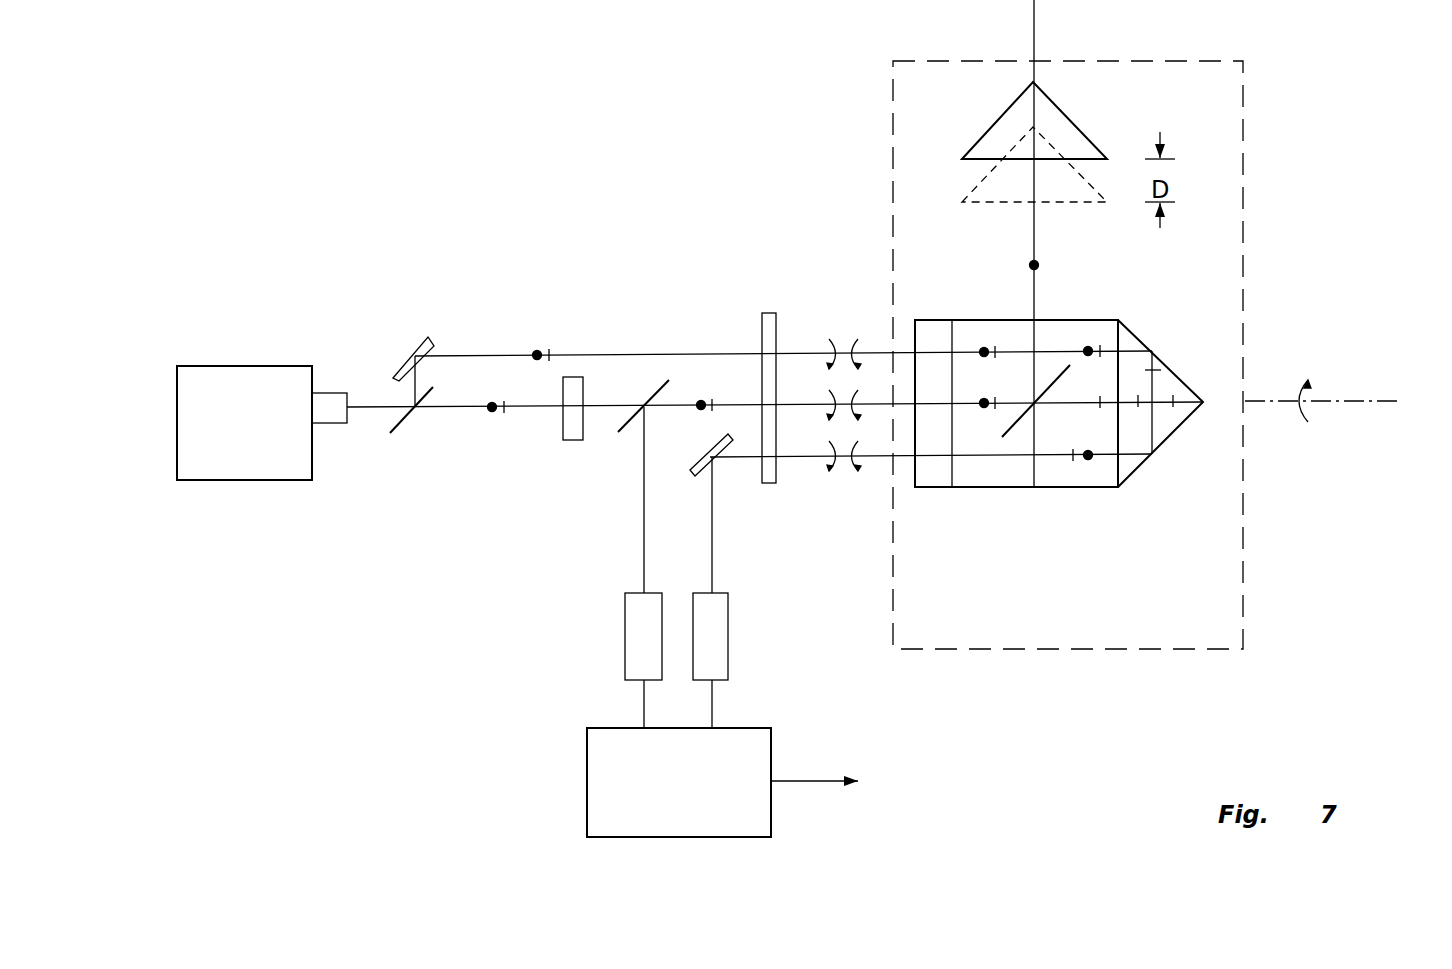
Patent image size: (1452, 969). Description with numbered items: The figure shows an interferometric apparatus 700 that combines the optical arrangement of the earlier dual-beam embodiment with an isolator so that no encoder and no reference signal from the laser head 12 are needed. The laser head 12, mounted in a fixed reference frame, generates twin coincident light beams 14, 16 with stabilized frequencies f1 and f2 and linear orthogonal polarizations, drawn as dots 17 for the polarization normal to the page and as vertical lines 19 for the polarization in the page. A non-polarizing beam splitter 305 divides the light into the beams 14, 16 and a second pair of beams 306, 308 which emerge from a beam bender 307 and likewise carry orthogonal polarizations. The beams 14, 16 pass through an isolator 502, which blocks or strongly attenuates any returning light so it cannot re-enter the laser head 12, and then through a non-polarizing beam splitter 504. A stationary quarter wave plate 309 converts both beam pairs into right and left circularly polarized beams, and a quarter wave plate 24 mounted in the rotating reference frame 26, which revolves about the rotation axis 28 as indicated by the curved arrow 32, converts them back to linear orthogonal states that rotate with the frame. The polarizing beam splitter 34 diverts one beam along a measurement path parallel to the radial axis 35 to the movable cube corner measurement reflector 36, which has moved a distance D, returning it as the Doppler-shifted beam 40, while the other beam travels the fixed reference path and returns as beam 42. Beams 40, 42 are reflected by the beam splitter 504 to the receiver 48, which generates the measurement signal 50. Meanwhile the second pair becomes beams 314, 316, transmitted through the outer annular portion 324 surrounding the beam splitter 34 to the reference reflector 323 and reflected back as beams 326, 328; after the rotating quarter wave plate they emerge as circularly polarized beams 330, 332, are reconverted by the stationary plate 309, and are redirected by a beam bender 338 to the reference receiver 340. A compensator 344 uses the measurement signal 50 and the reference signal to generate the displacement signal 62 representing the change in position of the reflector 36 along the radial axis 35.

The apparatus 700 is at (340, 157).
The laser head 12 is at (200, 366).
The light beam 14 is at (440, 411).
The light beam 16 is at (462, 411).
The dots 17 is at (492, 410).
The vertical lines 19 is at (505, 410).
The quarter wave plate 24 is at (931, 320).
The rotating reference frame 26 is at (945, 61).
The rotation axis 28 is at (1345, 402).
The curved arrow 32 is at (1300, 380).
The polarizing beam splitter 34 is at (1034, 419).
The radial axis 35 is at (1034, 30).
The measurement reflector 36 is at (1062, 110).
The beam 40 is at (1036, 282).
The beam 42 is at (1062, 408).
The receiver 48 is at (625, 635).
The measurement signal 50 is at (644, 708).
The displacement signal 62 is at (813, 785).
The non-polarizing beam splitter 305 is at (392, 428).
The beam 306 is at (451, 352).
The beam bender 307 is at (408, 350).
The beam 308 is at (470, 352).
The stationary quarter wave plate 309 is at (769, 313).
The beam 314 is at (963, 343).
The beam 316 is at (977, 341).
The reference reflector 323 is at (1138, 468).
The outer annular portion 324 is at (995, 476).
The beam 326 is at (970, 461).
The beam 328 is at (980, 461).
The beam 330 is at (803, 460).
The beam 332 is at (880, 461).
The beam bender 338 is at (700, 455).
The reference receiver 340 is at (728, 630).
The compensator 344 is at (771, 738).
The isolator 502 is at (583, 425).
The non-polarizing beam splitter 504 is at (656, 382).